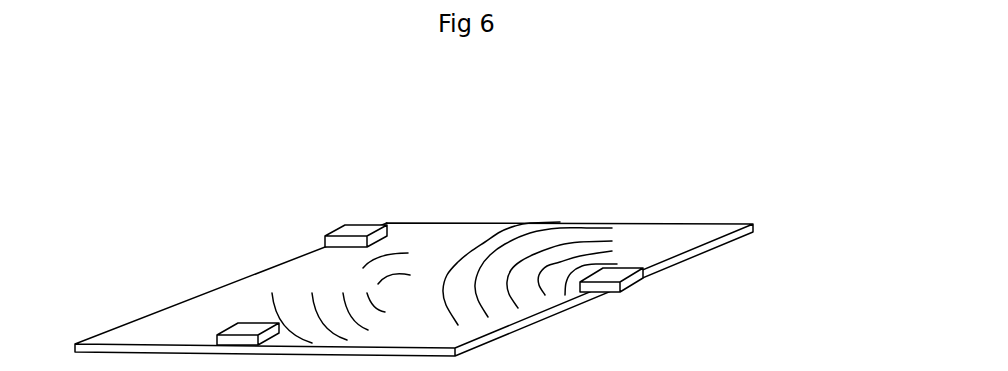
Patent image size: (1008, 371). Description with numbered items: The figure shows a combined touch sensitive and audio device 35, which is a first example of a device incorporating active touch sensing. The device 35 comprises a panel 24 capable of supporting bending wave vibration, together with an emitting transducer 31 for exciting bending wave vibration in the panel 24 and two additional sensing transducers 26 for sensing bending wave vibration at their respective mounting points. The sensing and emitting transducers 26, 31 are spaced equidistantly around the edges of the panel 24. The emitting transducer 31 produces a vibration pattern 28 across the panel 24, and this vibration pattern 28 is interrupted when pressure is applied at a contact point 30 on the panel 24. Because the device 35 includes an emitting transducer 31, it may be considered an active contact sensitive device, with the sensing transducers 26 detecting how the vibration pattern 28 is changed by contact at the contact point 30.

The panel 24 is at (155, 328).
The sensing transducers 26 is at (251, 327).
The vibration pattern 28 is at (472, 252).
The contact point 30 is at (392, 280).
The emitting transducer 31 is at (643, 286).
The combined touch sensitive and audio device 35 is at (453, 234).